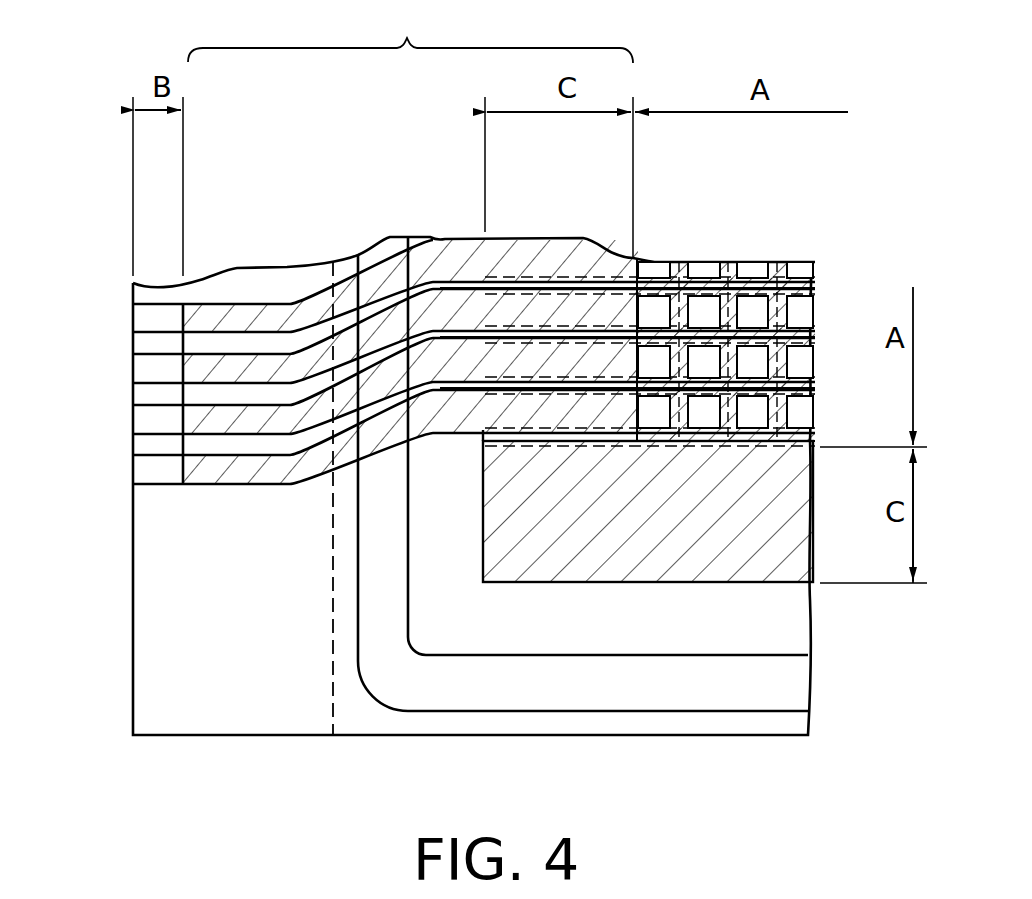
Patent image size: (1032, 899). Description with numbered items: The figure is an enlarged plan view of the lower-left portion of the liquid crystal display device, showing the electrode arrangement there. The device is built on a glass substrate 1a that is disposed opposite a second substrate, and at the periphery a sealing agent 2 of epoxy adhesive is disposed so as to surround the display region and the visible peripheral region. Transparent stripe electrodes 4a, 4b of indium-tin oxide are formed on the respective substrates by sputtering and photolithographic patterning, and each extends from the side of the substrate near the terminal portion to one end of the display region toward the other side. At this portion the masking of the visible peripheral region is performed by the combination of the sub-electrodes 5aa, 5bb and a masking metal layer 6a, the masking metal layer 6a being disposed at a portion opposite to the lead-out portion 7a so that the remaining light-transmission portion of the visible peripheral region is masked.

The substrate 1a is at (250, 715).
The sealing agent 2 is at (792, 680).
The stripe electrode 4a is at (143, 472).
The stripe electrode 4b is at (753, 263).
The sub-electrode 5aa is at (207, 477).
The sub-electrode 5bb is at (483, 433).
The masking metal layer 6a is at (768, 548).
The lead-out portion 7a is at (410, 33).